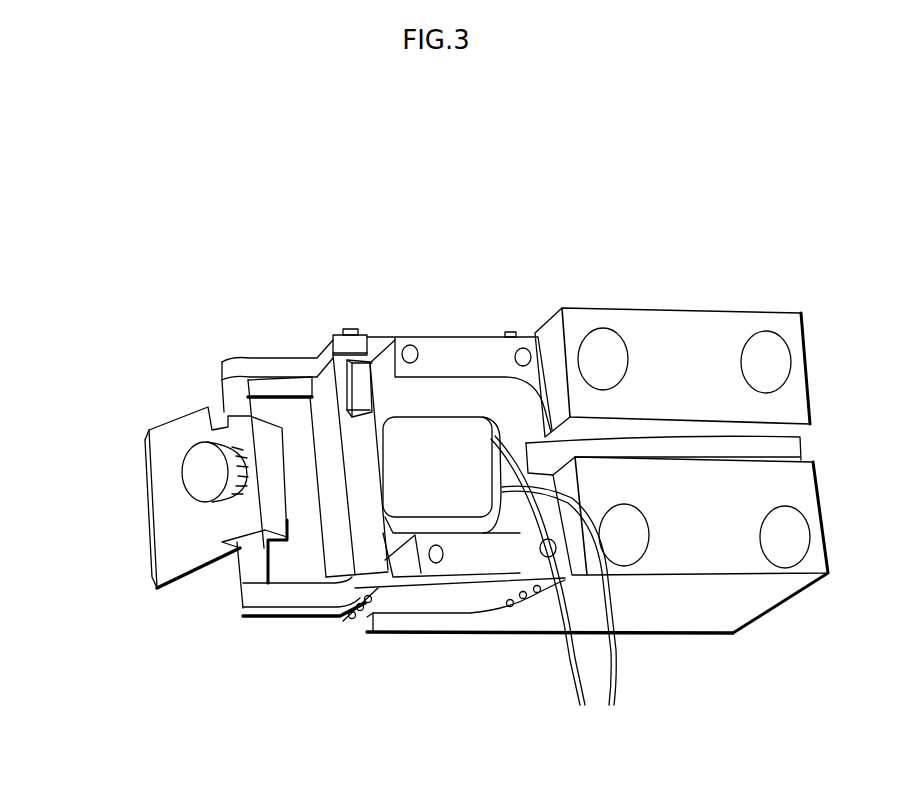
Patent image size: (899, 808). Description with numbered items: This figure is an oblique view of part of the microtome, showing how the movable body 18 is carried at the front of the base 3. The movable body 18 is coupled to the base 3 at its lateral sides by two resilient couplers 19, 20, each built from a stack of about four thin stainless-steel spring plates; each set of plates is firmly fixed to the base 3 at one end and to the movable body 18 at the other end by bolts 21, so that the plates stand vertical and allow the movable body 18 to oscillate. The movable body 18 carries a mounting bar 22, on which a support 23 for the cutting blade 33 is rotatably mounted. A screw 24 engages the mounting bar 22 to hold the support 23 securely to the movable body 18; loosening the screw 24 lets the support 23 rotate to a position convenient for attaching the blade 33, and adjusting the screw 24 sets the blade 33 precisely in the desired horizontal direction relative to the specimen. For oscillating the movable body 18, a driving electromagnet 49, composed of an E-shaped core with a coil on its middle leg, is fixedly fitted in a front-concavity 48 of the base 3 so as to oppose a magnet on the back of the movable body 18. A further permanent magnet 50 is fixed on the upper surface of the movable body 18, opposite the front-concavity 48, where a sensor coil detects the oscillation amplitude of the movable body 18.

The base 3 is at (678, 320).
The movable body 18 is at (333, 550).
The resilient coupler 19 is at (405, 603).
The resilient coupler 20 is at (372, 338).
The bolts 21 is at (350, 330).
The mounting bar 22 is at (248, 577).
The support 23 is at (167, 480).
The screw 24 is at (200, 457).
The cutting blade 33 is at (148, 536).
The front-concavity 48 is at (448, 388).
The driving electromagnet 49 is at (472, 508).
The permanent magnet 50 is at (346, 368).